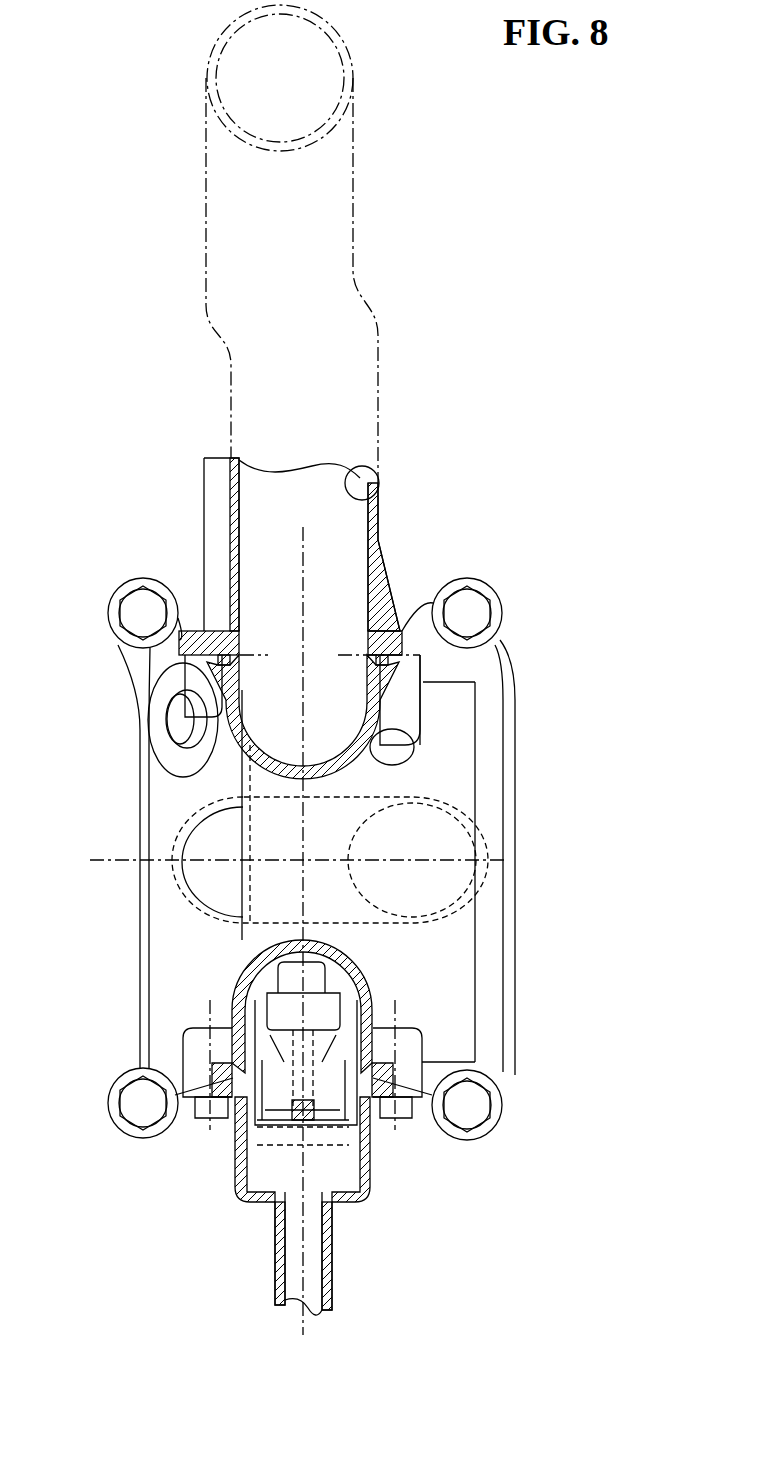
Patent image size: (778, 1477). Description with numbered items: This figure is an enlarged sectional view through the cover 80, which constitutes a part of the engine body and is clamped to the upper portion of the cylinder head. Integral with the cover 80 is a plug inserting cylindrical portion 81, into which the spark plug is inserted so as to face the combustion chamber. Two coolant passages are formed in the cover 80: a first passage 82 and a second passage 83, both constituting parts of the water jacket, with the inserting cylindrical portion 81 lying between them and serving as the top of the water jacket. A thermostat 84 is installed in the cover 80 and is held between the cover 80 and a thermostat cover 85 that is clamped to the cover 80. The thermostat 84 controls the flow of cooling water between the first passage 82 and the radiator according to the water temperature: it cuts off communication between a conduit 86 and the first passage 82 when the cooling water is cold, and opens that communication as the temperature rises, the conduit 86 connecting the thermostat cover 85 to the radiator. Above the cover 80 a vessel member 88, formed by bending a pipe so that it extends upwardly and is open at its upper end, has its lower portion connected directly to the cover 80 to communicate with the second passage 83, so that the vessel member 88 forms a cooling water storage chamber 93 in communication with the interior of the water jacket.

The cover 80 is at (158, 932).
The plug inserting cylindrical portion 81 is at (362, 926).
The first passage 82 is at (243, 968).
The second passage 83 is at (405, 743).
The thermostat 84 is at (236, 1175).
The thermostat cover 85 is at (371, 1166).
The conduit 86 is at (333, 1268).
The vessel member 88 is at (379, 517).
The cooling water storage chamber 93 is at (367, 469).